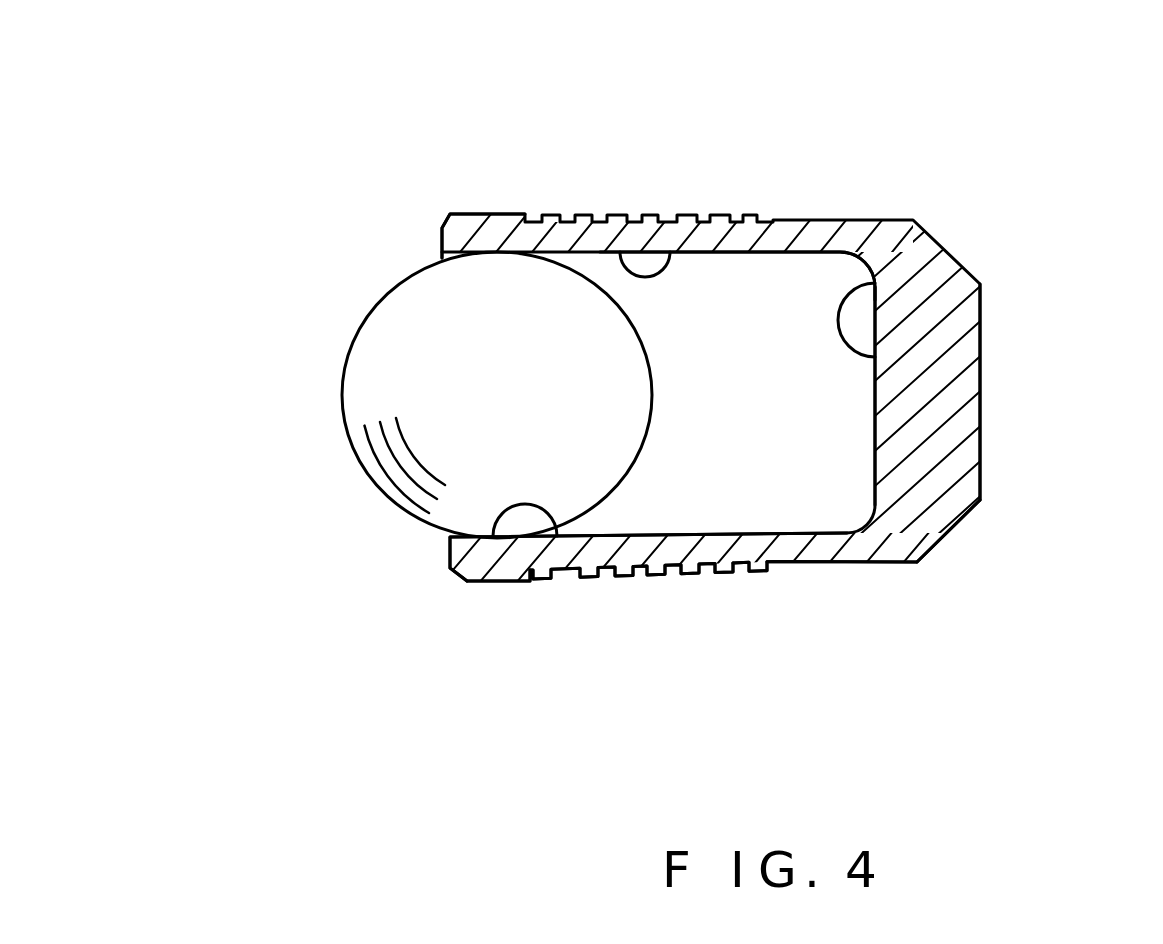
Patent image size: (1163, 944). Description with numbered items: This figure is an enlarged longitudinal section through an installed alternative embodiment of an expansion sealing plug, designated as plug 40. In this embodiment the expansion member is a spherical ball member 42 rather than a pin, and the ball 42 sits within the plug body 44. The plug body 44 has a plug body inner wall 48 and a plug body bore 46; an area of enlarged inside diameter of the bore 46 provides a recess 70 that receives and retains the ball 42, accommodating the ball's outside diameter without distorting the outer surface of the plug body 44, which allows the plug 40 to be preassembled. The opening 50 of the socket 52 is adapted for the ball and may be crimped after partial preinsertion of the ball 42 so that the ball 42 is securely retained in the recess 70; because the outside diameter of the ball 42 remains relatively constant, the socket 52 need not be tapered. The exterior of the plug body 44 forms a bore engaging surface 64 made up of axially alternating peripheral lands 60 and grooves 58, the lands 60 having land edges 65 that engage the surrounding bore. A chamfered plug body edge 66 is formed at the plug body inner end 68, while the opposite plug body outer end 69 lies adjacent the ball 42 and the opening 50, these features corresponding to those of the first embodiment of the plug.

The plug 40 is at (188, 100).
The spherical ball member 42 is at (402, 333).
The plug body 44 is at (820, 232).
The plug body bore 46 is at (674, 253).
The plug body inner wall 48 is at (862, 265).
The opening 50 is at (442, 258).
The socket 52 is at (747, 282).
The grooves 58 is at (740, 565).
The lands 60 is at (685, 577).
The bore engaging surface 64 is at (502, 582).
The land edges 65 is at (760, 567).
The chamfered plug body edge 66 is at (952, 527).
The plug body inner end 68 is at (975, 390).
The plug body outer end 69 is at (457, 567).
The recess 70 is at (557, 513).